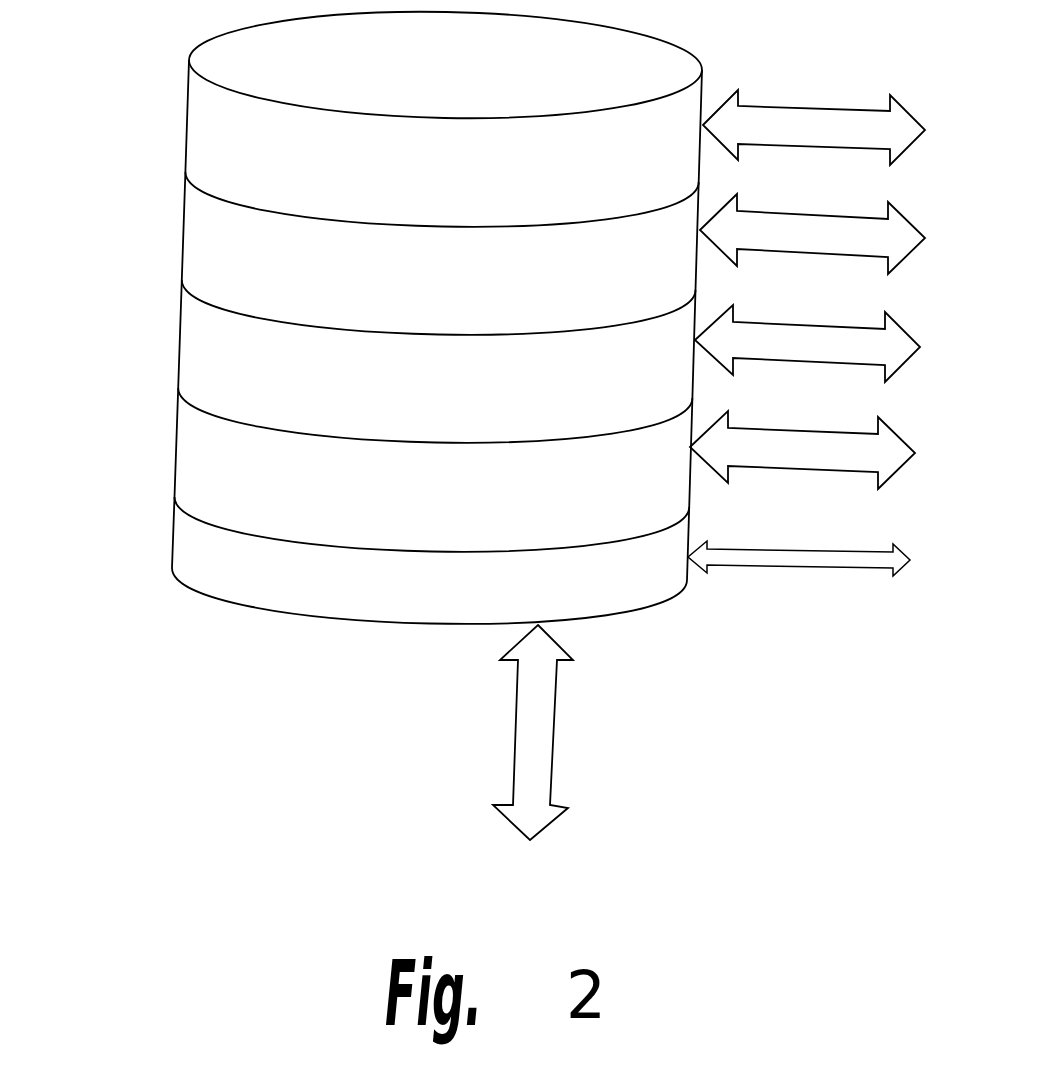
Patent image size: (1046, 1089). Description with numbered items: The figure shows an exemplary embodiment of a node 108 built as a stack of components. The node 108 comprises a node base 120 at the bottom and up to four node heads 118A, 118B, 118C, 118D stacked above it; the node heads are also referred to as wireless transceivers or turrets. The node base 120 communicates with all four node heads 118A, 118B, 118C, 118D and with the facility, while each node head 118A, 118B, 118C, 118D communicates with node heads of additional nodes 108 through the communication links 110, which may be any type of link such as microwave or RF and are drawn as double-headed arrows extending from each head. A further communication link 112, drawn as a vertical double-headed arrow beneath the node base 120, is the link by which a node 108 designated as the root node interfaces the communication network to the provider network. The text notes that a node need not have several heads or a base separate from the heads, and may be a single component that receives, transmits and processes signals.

The node 108 is at (312, 729).
The communication link 110 is at (843, 112).
The communication link 112 is at (557, 736).
The node head 118A is at (187, 135).
The node head 118B is at (183, 248).
The node head 118C is at (178, 352).
The node head 118D is at (177, 463).
The node base 120 is at (173, 548).